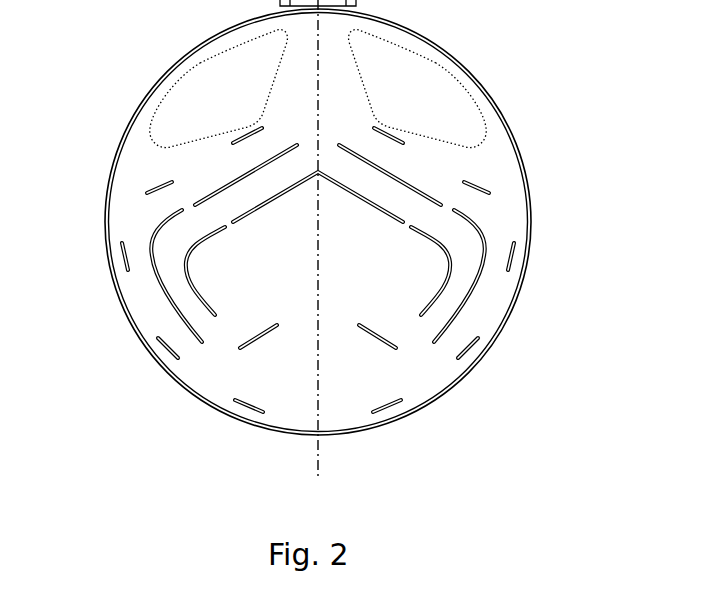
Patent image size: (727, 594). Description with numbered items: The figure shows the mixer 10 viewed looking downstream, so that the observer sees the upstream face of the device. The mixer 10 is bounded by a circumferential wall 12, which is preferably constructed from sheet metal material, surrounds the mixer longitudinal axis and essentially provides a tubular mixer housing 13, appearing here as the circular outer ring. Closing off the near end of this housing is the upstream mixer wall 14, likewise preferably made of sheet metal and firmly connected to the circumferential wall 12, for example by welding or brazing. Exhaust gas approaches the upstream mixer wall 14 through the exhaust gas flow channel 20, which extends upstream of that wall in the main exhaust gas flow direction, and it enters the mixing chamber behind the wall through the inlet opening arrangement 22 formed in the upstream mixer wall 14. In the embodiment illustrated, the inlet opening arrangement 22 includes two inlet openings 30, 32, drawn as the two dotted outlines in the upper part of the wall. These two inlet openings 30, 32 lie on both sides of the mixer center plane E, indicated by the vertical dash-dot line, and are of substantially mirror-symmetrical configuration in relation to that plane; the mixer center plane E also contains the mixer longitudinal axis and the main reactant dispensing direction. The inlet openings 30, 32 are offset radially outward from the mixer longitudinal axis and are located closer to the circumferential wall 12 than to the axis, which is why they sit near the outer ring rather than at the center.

The mixer 10 is at (530, 46).
The circumferential wall 12 is at (533, 213).
The tubular mixer housing 13 is at (123, 307).
The upstream mixer wall 14 is at (215, 383).
The exhaust gas flow channel 20 is at (493, 160).
The inlet opening arrangement 22 is at (145, 160).
The inlet opening 30 is at (203, 80).
The inlet opening 32 is at (462, 115).
The mixer center plane E is at (323, 460).